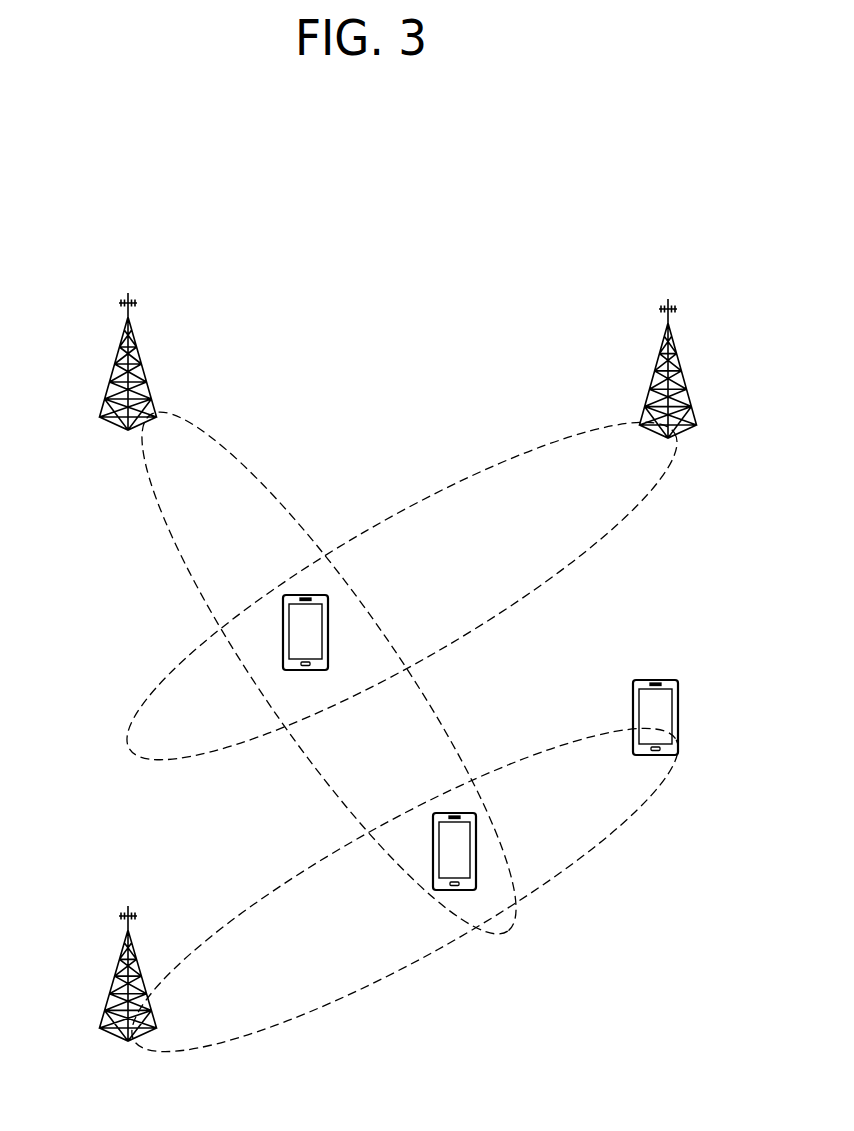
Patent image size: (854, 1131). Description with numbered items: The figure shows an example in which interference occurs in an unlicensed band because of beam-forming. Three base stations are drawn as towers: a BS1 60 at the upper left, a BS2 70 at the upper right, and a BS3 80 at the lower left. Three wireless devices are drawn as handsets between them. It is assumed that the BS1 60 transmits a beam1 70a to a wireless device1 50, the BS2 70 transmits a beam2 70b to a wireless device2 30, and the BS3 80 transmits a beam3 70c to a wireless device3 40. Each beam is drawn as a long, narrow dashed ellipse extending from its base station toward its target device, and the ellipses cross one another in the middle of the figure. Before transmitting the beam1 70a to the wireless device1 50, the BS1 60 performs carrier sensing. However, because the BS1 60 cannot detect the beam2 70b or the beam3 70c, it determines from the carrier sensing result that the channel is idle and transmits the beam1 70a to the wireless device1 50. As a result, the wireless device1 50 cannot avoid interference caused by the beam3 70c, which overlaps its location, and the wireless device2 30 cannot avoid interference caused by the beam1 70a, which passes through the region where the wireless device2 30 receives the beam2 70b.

The wireless device2 30 is at (310, 595).
The wireless device3 40 is at (655, 680).
The wireless device1 50 is at (476, 863).
The BS1 60 is at (123, 329).
The BS2 70 is at (673, 335).
The BS3 80 is at (123, 939).
The beam1 70a is at (247, 467).
The beam2 70b is at (480, 470).
The beam3 70c is at (238, 912).